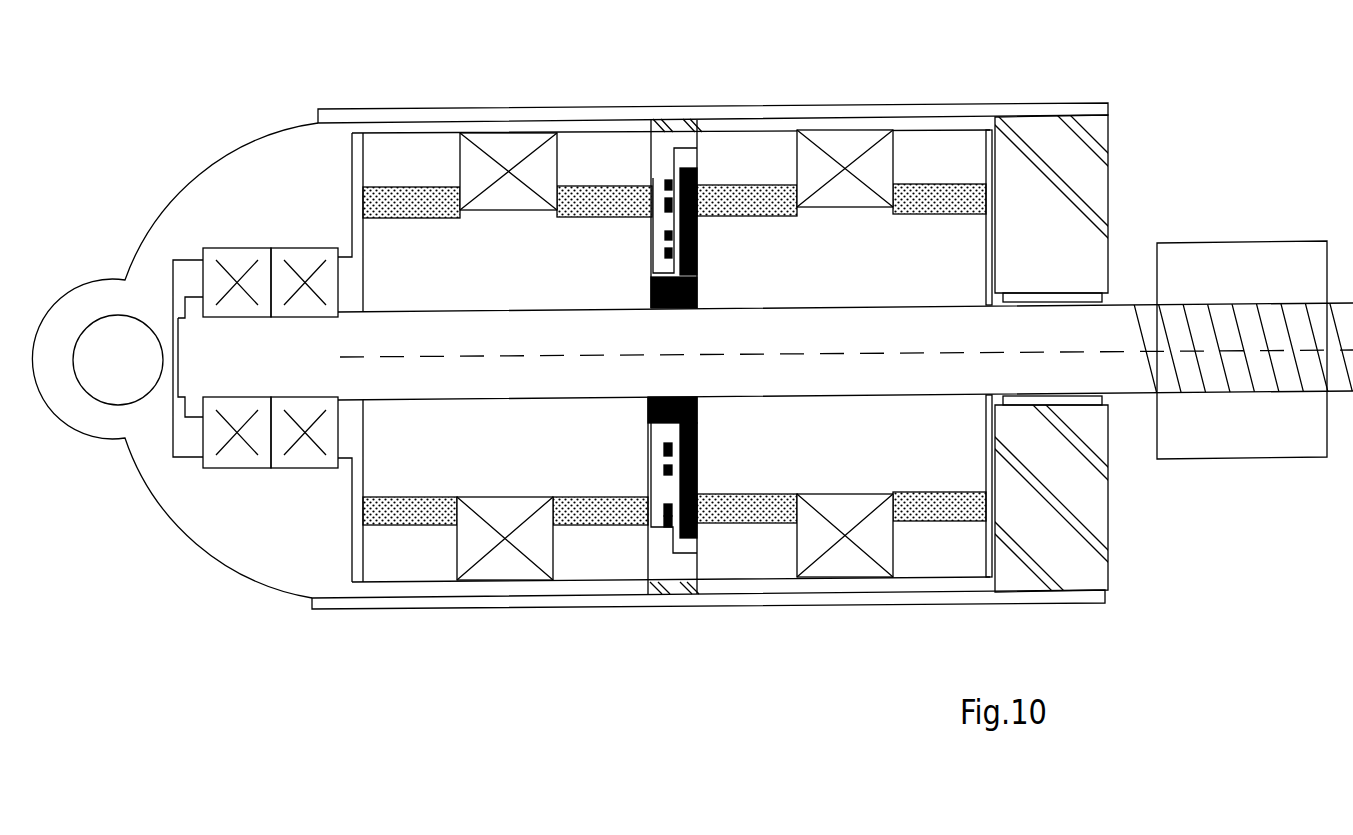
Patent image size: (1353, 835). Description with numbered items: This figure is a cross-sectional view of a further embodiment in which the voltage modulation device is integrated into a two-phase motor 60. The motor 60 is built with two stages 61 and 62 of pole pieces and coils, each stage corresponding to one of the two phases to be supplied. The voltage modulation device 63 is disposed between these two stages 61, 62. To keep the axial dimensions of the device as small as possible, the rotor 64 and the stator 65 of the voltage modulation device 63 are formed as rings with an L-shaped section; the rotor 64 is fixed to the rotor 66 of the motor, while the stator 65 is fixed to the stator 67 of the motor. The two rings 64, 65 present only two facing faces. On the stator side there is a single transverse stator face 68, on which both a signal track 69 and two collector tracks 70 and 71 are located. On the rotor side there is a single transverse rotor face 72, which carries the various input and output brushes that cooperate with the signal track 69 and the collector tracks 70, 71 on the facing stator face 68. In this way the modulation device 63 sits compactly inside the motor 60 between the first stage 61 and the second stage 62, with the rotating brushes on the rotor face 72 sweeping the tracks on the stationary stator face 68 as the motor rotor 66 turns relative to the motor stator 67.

The two-phase motor 60 is at (372, 682).
The first stage of pole pieces and coils 61 is at (408, 183).
The second stage of pole pieces and coils 62 is at (845, 155).
The voltage modulation device 63 is at (672, 562).
The rotor of the voltage modulation device 64 is at (684, 118).
The stator of the voltage modulation device 65 is at (660, 140).
The rotor of the motor 66 is at (812, 278).
The stator of the motor 67 is at (667, 118).
The transverse stator face 68 is at (676, 212).
The signal track 69 is at (664, 527).
The collector track 70 is at (677, 469).
The collector track 71 is at (676, 449).
The transverse rotor face 72 is at (675, 222).